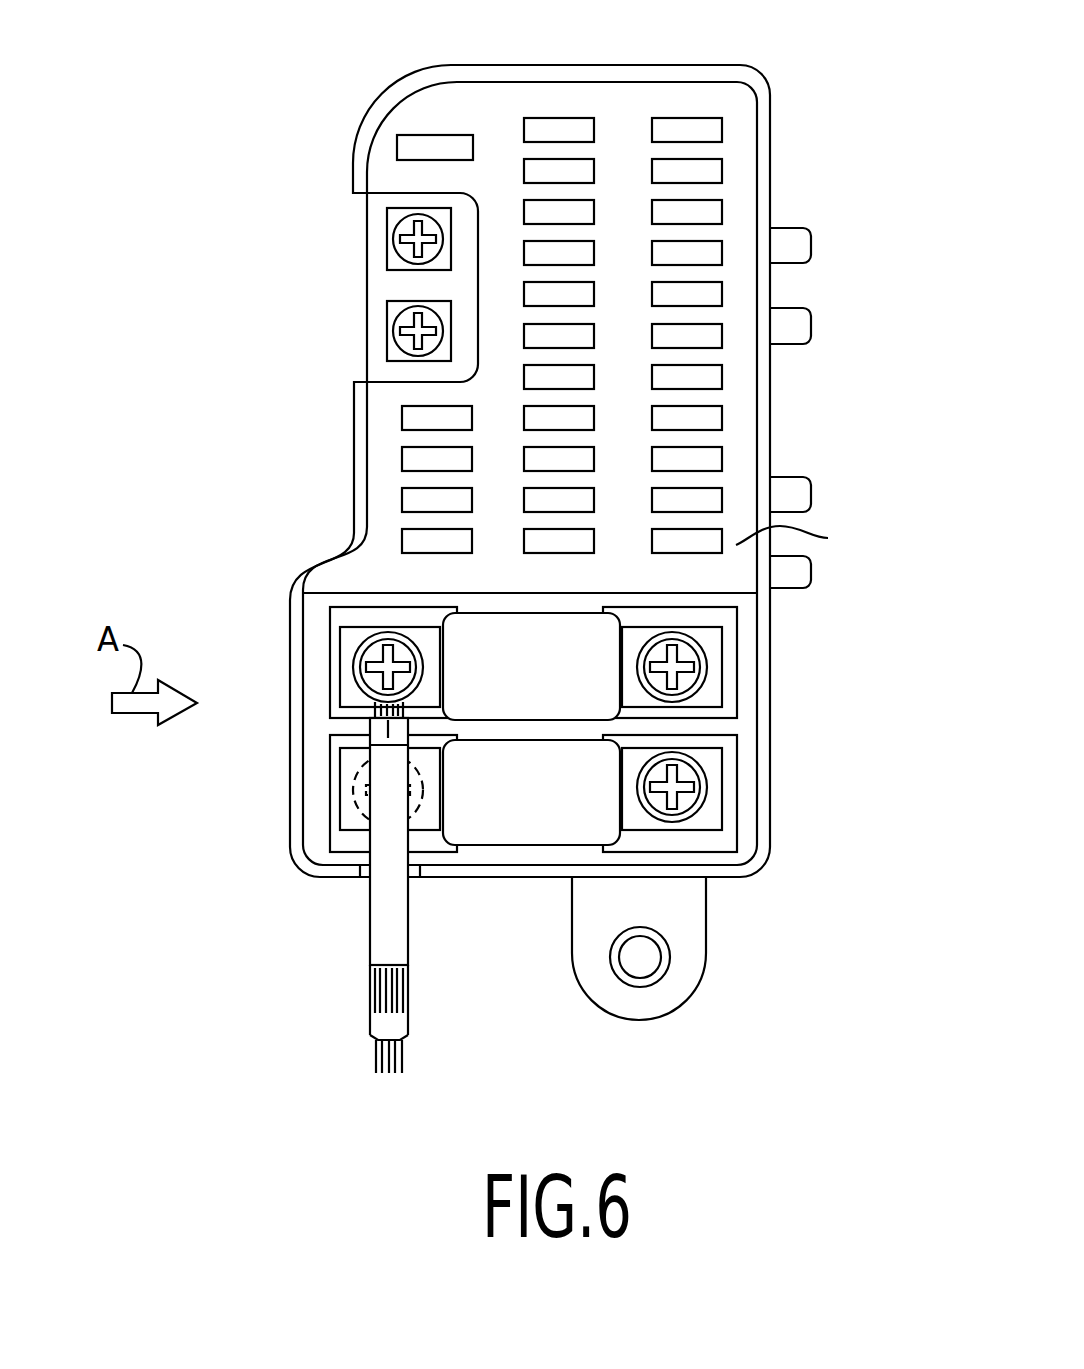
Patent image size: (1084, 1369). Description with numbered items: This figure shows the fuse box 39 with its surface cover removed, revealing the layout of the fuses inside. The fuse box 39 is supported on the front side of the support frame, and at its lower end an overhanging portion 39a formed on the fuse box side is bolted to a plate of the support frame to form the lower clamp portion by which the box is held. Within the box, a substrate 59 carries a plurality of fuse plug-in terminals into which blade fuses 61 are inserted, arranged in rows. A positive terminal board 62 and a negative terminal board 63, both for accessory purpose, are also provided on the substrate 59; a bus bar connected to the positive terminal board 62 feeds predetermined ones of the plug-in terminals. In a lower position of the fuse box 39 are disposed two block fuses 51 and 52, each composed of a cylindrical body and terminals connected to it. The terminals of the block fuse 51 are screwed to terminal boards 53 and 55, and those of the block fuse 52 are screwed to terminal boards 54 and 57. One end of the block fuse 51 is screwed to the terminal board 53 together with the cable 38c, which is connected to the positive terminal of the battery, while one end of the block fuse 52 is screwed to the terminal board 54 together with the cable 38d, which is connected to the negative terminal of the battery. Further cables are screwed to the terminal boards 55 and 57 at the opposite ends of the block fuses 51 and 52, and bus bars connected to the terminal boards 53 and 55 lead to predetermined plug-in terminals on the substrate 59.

The fuse box 39 is at (800, 64).
The overhanging portion 39a is at (690, 957).
The blade fuses 61 is at (745, 405).
The substrate 59 is at (803, 531).
The positive terminal board 62 is at (390, 258).
The negative terminal board 63 is at (390, 318).
The terminal board 53 is at (338, 622).
The terminal board 55 is at (725, 618).
The block fuse 51 is at (563, 689).
The block fuse 52 is at (563, 809).
The terminal board 54 is at (338, 838).
The terminal board 57 is at (730, 838).
The cable 38c is at (387, 923).
The cable 38d is at (372, 1000).